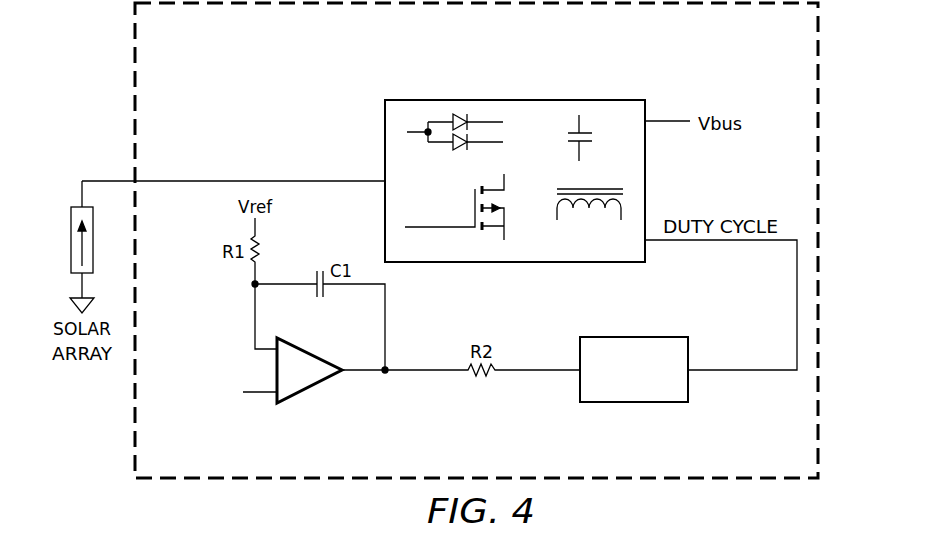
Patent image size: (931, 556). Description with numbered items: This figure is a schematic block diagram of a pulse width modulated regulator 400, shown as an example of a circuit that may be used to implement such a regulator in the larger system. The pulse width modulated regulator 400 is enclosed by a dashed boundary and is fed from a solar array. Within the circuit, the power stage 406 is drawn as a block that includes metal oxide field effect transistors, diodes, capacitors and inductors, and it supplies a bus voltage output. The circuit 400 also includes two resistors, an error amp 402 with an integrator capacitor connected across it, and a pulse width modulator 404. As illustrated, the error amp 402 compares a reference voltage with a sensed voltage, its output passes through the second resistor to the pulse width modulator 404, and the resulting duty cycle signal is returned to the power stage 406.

The pulse width modulated regulator 400 is at (128, 67).
The error amp 402 is at (312, 352).
The pulse width modulator 404 is at (637, 337).
The power stage 406 is at (378, 142).